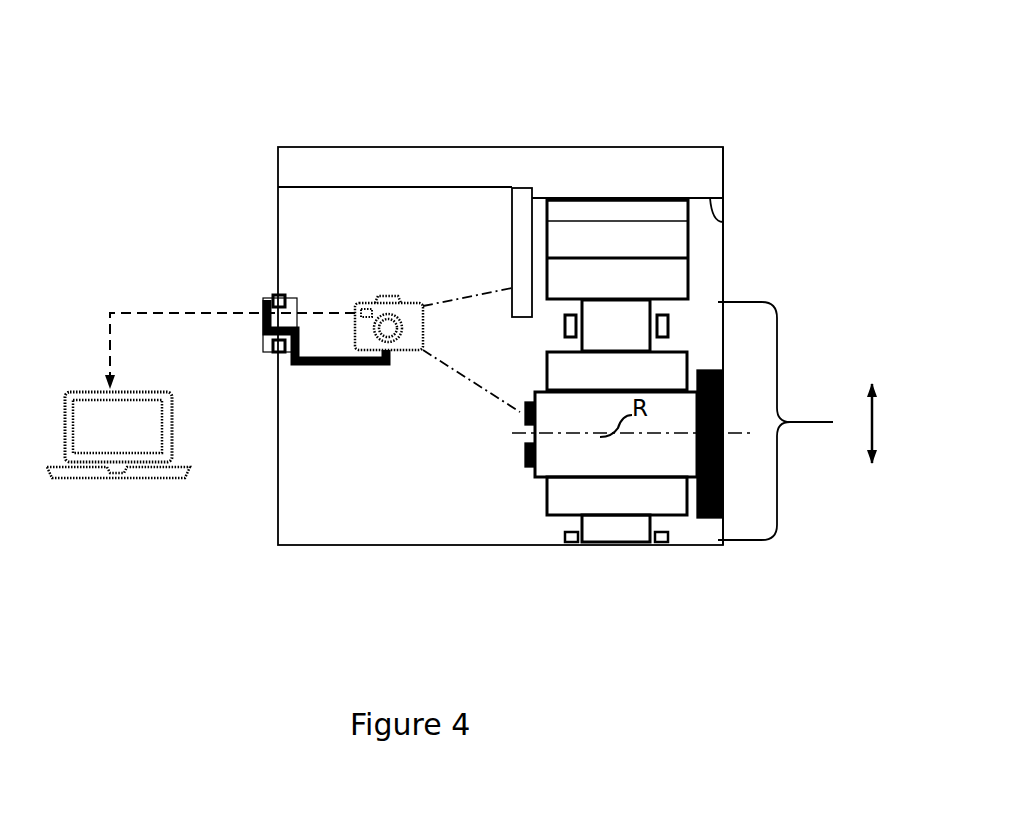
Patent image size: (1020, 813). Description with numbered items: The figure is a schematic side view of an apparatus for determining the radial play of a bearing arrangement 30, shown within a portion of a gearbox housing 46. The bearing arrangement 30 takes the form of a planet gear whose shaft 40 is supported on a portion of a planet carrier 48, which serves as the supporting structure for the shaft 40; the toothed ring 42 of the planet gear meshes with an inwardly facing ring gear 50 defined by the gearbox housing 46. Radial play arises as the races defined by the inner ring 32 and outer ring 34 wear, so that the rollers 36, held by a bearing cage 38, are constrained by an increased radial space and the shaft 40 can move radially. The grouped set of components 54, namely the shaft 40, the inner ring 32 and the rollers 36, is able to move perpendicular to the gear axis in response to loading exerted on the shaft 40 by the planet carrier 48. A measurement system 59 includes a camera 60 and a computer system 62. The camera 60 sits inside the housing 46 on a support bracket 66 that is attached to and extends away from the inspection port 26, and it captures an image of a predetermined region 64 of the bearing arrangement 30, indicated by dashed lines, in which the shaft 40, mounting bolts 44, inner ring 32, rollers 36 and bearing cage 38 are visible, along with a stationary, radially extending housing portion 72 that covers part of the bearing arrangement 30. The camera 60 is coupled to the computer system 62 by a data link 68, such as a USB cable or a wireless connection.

The inspection port 26 is at (270, 287).
The bearing arrangement 30 is at (807, 78).
The inner ring 32 is at (565, 503).
The outer ring 34 is at (585, 273).
The rollers 36 is at (602, 308).
The bearing cage 38 is at (667, 320).
The shaft 40 is at (560, 453).
The toothed ring 42 is at (595, 205).
The mounting bolts 44 is at (527, 460).
The gearbox housing 46 is at (550, 150).
The planet carrier 48 is at (717, 520).
The ring gear 50 is at (716, 218).
The grouped set of components 54 is at (795, 421).
The measurement system 59 is at (283, 327).
The camera 60 is at (383, 268).
The computer system 62 is at (123, 508).
The predetermined region 64 is at (475, 393).
The support bracket 66 is at (322, 387).
The data link 68 is at (195, 310).
The housing portion 72 is at (514, 232).